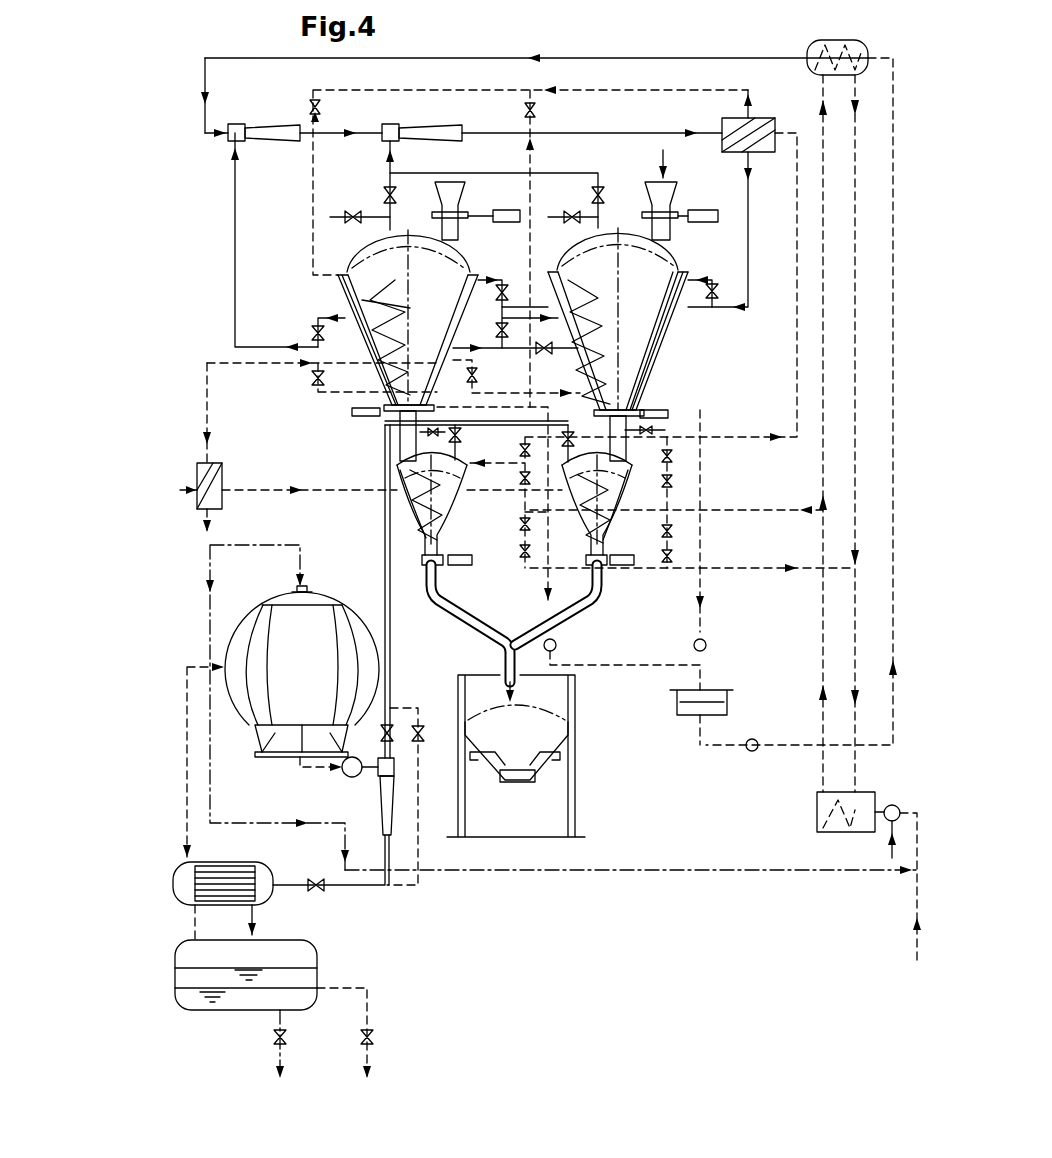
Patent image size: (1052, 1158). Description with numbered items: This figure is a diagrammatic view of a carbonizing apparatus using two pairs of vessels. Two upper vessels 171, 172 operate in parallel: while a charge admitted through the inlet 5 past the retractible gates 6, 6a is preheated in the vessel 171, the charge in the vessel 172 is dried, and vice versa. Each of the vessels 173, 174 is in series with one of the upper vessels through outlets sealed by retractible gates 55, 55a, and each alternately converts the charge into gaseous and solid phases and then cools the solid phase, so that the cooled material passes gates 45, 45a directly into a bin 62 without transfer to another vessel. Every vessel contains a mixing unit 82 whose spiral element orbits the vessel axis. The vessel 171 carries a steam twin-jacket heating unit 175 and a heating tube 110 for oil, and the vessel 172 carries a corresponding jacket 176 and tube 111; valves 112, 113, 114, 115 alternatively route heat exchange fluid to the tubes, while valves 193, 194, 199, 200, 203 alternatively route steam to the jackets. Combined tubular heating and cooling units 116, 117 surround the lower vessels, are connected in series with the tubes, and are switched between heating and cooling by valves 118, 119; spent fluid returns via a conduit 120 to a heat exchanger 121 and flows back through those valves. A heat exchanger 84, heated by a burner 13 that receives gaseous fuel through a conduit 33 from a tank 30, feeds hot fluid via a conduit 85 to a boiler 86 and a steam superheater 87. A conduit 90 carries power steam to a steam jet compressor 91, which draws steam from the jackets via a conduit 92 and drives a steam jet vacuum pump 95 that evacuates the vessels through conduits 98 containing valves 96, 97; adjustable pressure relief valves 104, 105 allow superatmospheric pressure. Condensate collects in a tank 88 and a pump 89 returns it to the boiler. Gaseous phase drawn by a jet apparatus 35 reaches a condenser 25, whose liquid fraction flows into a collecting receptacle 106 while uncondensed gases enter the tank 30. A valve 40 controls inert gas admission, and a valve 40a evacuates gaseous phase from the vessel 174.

The conduit 90 is at (740, 50).
The boiler 86 is at (850, 40).
The steam jet compressor 91 is at (280, 128).
The valve 112 is at (320, 107).
The steam jet vacuum pump 95 is at (424, 128).
The valve 113 is at (535, 110).
The steam superheater 87 is at (760, 118).
The conduits 98 is at (395, 175).
The valve 96 is at (384, 195).
The adjustable pressure relief valve 104 is at (343, 214).
The retractible gate 6 is at (506, 210).
The inlet 5 is at (664, 160).
The valve 97 is at (604, 195).
The retractible gate 6a is at (702, 210).
The adjustable pressure relief valve 105 is at (572, 212).
The conduit 92 is at (235, 230).
The vessel 171 is at (385, 258).
The mixing unit 82 is at (398, 291).
The second heating unit 110 is at (345, 300).
The vessel 172 is at (640, 278).
The valve 199 is at (515, 270).
The valve 200 is at (718, 290).
The valve 193 is at (312, 334).
The valve 194 is at (511, 327).
The valve 203 is at (515, 334).
The valve 115 is at (478, 376).
The first heating unit 176 is at (658, 340).
The second heating unit 111 is at (640, 362).
The first heating unit 175 is at (312, 380).
The valve 114 is at (320, 400).
The conduit 120 is at (208, 440).
The heat exchanger 121 is at (222, 470).
The retractible gate 55 is at (362, 416).
The valve 40 is at (461, 438).
The retractible gate 55a is at (662, 412).
The valve 40a is at (580, 428).
The vessel 173 is at (428, 505).
The combined tubular heating and cooling unit 116 is at (405, 482).
The valve 119 is at (518, 495).
The vessel 174 is at (600, 525).
The combined tubular heating and cooling unit 117 is at (622, 505).
The retractible gate 45 is at (462, 565).
The retractible gate 45a is at (628, 565).
The valve 118 is at (548, 588).
The conduit 85 is at (823, 636).
The tank 30 is at (250, 625).
The jet apparatus 35 is at (383, 810).
The bin 62 is at (516, 756).
The condensate collecting tank 88 is at (725, 705).
The pump 89 is at (752, 751).
The heat exchanger 84 is at (817, 830).
The burner 13 is at (897, 805).
The conduit 33 is at (515, 870).
The condenser 25 is at (272, 850).
The collecting receptacle 106 is at (215, 1010).